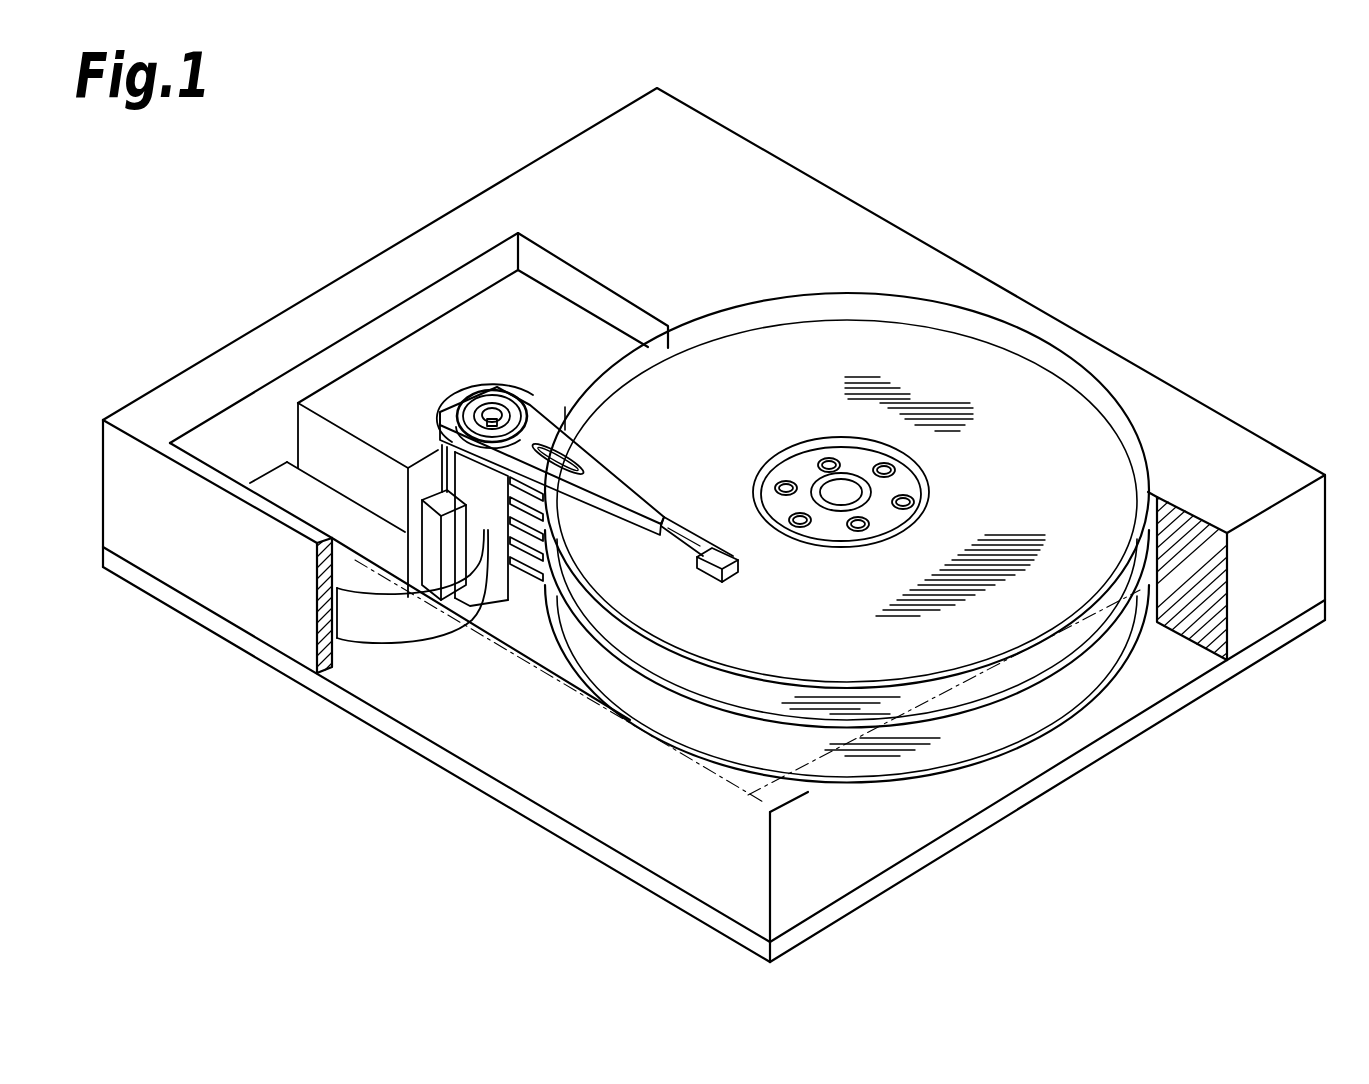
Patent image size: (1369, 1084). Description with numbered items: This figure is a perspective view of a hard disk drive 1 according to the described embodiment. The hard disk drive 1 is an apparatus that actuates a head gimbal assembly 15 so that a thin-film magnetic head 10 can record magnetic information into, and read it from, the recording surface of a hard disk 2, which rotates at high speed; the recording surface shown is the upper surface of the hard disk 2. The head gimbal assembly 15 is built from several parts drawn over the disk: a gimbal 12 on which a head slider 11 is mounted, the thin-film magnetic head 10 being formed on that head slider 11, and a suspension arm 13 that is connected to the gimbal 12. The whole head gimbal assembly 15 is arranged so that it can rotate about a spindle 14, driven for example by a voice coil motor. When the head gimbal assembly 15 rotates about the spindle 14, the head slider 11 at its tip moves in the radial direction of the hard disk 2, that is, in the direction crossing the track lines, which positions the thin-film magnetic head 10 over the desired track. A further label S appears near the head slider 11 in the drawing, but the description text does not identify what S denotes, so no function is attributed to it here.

The hard disk drive 1 is at (985, 207).
The hard disk 2 is at (995, 388).
The thin-film magnetic head 10 is at (714, 550).
The head slider 11 is at (713, 582).
The gimbal 12 is at (671, 532).
The suspension arm 13 is at (600, 493).
The spindle 14 is at (496, 396).
The head gimbal assembly 15 is at (645, 481).
The slider S is at (740, 577).